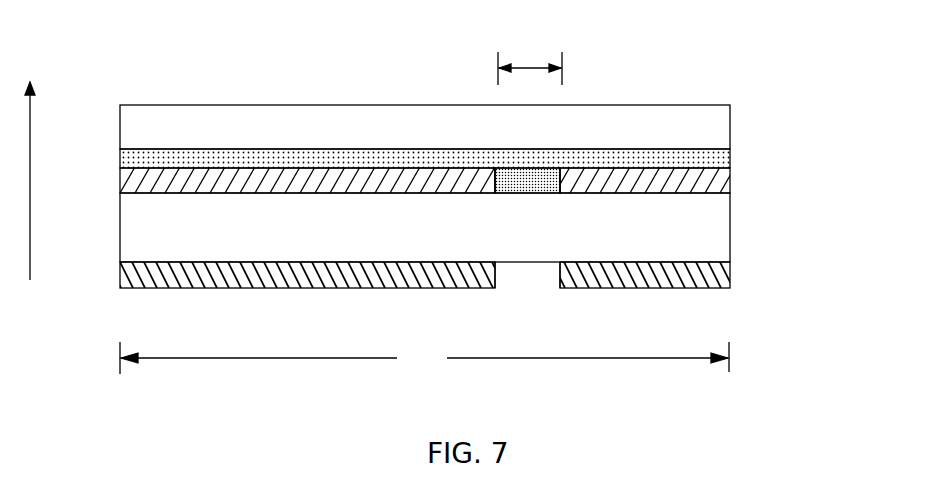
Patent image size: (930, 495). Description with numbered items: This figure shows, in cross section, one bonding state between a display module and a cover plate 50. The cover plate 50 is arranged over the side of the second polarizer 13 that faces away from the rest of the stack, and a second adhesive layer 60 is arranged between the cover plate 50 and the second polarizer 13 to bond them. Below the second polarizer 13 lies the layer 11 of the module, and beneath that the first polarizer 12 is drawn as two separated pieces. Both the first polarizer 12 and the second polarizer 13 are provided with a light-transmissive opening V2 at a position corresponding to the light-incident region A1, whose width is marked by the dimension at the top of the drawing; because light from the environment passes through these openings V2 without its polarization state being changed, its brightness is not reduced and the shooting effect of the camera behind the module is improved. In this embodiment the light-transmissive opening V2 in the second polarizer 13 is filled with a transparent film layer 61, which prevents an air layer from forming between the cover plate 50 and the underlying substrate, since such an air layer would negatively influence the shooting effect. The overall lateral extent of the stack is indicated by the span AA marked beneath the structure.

The cover plate 50 is at (730, 117).
The second adhesive layer 60 is at (120, 157).
The second polarizer 13 is at (120, 173).
The transparent film layer 61 is at (525, 177).
The substrate 11 is at (730, 208).
The first polarizer 12 is at (120, 280).
The light-transmissive opening V2 is at (553, 172).
The light-incident region A1 is at (530, 58).
The active area AA is at (424, 358).